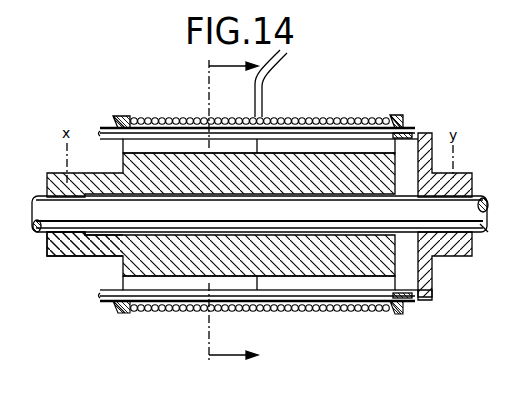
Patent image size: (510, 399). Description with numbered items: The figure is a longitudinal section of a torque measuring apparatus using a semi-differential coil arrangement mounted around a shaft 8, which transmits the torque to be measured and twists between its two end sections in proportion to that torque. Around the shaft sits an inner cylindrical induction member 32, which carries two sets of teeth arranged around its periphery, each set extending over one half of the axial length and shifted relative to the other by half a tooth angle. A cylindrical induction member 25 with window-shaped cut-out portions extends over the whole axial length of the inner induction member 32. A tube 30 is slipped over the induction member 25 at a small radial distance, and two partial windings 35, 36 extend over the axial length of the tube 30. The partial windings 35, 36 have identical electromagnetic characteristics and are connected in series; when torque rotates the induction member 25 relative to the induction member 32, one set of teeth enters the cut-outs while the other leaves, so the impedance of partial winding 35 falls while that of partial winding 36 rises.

The partial winding 35 is at (155, 117).
The partial winding 36 is at (327, 118).
The tube 30 is at (405, 116).
The cylindrical induction member 25 is at (432, 297).
The inner cylindrical induction member 32 is at (90, 248).
The shaft 8 is at (481, 214).